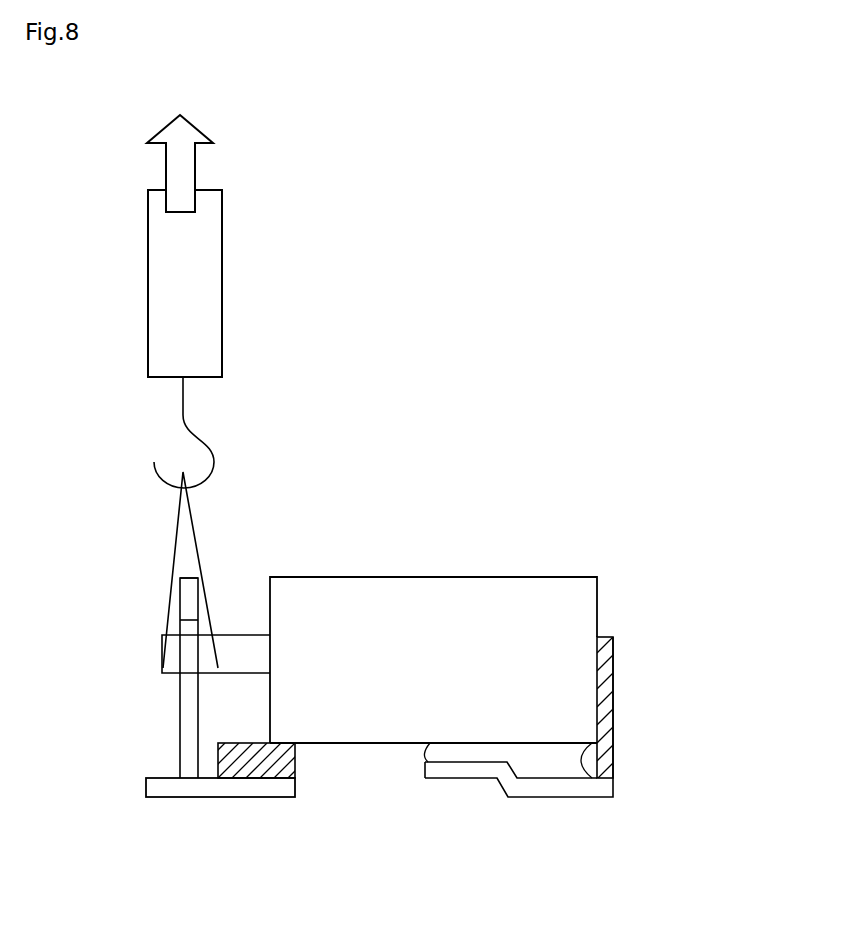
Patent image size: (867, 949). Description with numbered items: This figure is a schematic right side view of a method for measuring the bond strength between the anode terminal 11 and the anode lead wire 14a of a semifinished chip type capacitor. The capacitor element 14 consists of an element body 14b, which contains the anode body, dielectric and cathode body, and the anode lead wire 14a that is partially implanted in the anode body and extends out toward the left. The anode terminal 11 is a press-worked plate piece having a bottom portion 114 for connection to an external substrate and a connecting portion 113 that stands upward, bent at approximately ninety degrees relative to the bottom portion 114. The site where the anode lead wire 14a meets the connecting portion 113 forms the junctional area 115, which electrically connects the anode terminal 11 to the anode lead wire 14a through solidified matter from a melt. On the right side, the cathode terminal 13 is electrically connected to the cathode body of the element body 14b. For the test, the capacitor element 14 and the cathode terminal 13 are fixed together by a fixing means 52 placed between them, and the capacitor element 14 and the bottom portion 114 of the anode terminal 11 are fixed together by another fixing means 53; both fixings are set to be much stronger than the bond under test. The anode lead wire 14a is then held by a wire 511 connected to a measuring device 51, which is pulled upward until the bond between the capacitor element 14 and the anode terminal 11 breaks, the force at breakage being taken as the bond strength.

The measuring device 51 is at (225, 280).
The wire 511 is at (176, 548).
The anode terminal 11 is at (154, 707).
The connecting portion 113 is at (180, 700).
The bottom portion 114 is at (197, 797).
The junctional area 115 is at (180, 619).
The capacitor element 14 is at (421, 592).
The anode lead wire 14a is at (240, 635).
The element body 14b is at (463, 577).
The fixing means 52 is at (615, 643).
The fixing means 53 is at (295, 757).
The cathode terminal 13 is at (618, 788).